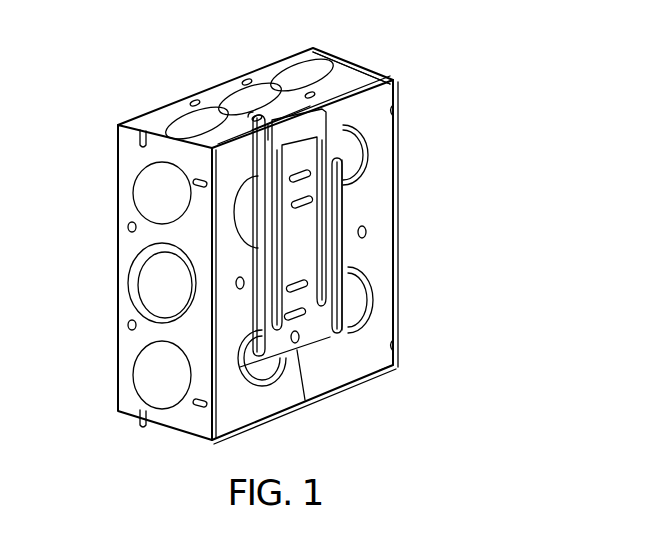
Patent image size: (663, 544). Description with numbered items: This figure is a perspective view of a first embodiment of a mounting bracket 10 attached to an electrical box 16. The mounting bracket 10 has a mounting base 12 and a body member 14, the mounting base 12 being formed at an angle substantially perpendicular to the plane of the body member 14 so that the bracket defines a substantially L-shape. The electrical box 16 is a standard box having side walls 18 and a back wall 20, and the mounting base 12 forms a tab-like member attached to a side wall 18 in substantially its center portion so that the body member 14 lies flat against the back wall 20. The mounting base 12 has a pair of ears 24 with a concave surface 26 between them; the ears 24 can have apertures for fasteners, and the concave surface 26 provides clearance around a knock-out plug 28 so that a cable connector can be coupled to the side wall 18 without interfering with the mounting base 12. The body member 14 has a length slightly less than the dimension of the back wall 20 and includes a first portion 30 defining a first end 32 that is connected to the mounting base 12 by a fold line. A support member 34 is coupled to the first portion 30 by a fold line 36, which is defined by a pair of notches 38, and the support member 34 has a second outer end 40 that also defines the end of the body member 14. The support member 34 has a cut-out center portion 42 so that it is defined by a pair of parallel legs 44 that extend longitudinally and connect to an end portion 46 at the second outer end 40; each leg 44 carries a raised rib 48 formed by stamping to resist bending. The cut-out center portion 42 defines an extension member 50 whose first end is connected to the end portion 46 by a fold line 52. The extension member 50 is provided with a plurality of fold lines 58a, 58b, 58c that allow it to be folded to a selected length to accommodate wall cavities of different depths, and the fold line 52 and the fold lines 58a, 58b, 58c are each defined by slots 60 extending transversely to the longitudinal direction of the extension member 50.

The mounting bracket 10 is at (396, 78).
The mounting base 12 is at (342, 100).
The body member 14 is at (347, 217).
The electrical box 16 is at (400, 286).
The side wall 18 is at (268, 76).
The back wall 20 is at (333, 370).
The ears 24 is at (200, 122).
The concave surface 26 is at (240, 96).
The knock-out plug 28 is at (143, 193).
The first portion 30 is at (398, 102).
The first end 32 is at (345, 118).
The support member 34 is at (253, 307).
The fold line 36 is at (336, 134).
The notches 38 is at (338, 148).
The second outer end 40 is at (308, 332).
The cut-out center portion 42 is at (259, 135).
The legs 44 is at (247, 272).
The end portion 46 is at (278, 362).
The raised rib 48 is at (332, 300).
The extension member 50 is at (366, 236).
The fold line 52 is at (373, 365).
The fold line 58a is at (405, 222).
The fold line 58b is at (300, 200).
The fold line 58c is at (312, 178).
The slots 60 is at (292, 181).